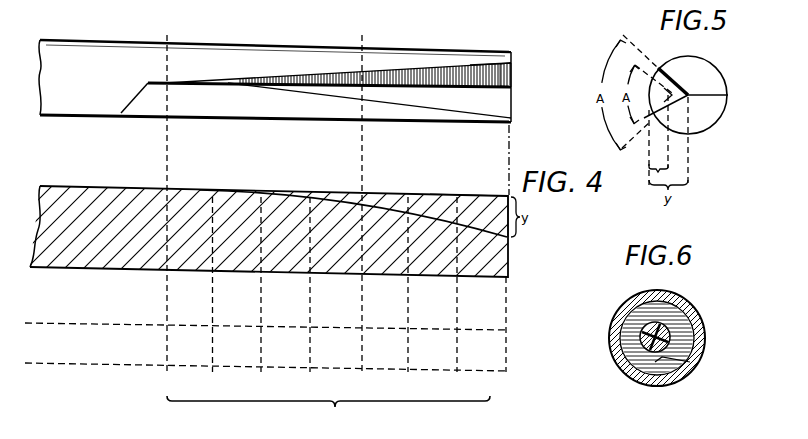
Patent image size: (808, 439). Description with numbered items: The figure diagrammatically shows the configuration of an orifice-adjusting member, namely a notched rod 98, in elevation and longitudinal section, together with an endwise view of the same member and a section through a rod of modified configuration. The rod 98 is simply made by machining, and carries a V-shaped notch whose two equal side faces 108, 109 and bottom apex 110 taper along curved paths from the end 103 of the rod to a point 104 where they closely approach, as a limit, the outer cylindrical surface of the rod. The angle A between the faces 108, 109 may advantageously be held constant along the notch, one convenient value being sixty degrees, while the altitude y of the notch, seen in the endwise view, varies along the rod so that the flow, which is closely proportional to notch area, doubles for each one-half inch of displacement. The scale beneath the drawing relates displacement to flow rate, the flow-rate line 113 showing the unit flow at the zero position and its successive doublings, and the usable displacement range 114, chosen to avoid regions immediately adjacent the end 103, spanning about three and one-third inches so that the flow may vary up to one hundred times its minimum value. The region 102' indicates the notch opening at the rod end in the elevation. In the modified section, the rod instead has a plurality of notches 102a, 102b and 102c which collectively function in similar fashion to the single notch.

In FIG. 4, the rod 98 is at (122, 56).
In FIG. 4, the end 103 is at (297, 123).
In FIG. 4, the point 104 is at (122, 113).
In FIG. 4, the side face 109 is at (409, 73).
In FIG. 5, the side face 109 is at (665, 83).
In FIG. 4, the flow passage 102' is at (494, 41).
In FIG. 4, the bottom apex 110 is at (505, 86).
In FIG. 5, the bottom apex 110 is at (728, 95).
In FIG. 4, the side face 108 is at (459, 110).
In FIG. 5, the side face 108 is at (675, 103).
In FIG. 4, the flow rate scale line 113 is at (136, 324).
In FIG. 4, the usable displacement range 114 is at (274, 397).
In FIG. 6, the notch 102a is at (608, 341).
In FIG. 6, the notch 102b is at (665, 328).
In FIG. 6, the notch 102c is at (685, 366).